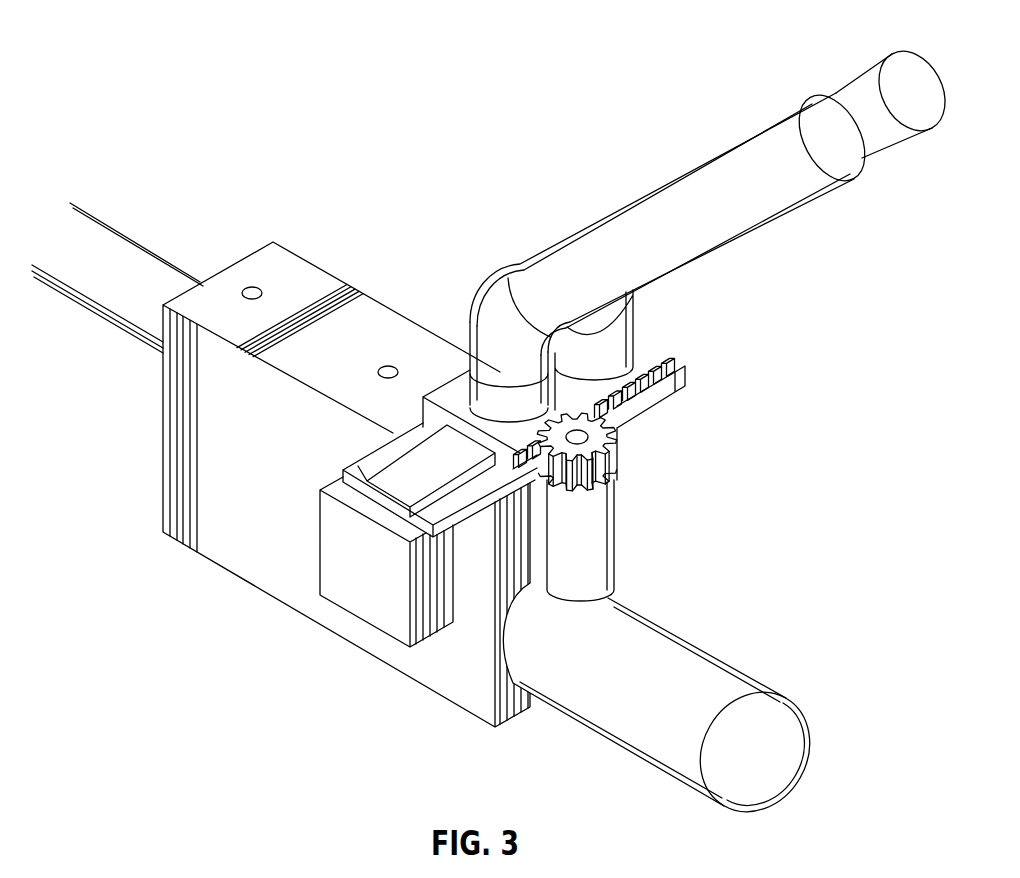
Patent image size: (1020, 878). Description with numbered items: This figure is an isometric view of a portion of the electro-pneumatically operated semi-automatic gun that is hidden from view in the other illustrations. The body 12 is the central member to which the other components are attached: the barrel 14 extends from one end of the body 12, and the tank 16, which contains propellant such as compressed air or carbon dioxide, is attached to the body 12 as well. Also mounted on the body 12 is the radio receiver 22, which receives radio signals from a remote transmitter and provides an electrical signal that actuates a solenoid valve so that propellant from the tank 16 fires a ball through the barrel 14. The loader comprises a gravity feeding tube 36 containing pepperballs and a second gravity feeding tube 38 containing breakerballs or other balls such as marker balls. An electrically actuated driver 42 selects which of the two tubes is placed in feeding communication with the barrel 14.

The body 12 is at (297, 270).
The barrel 14 is at (100, 296).
The tank 16 is at (654, 703).
The radio receiver 22 is at (353, 598).
The gravity feeding tube 36 is at (668, 197).
The second gravity feeding tube 38 is at (862, 86).
The electrically actuated driver 42 is at (632, 509).